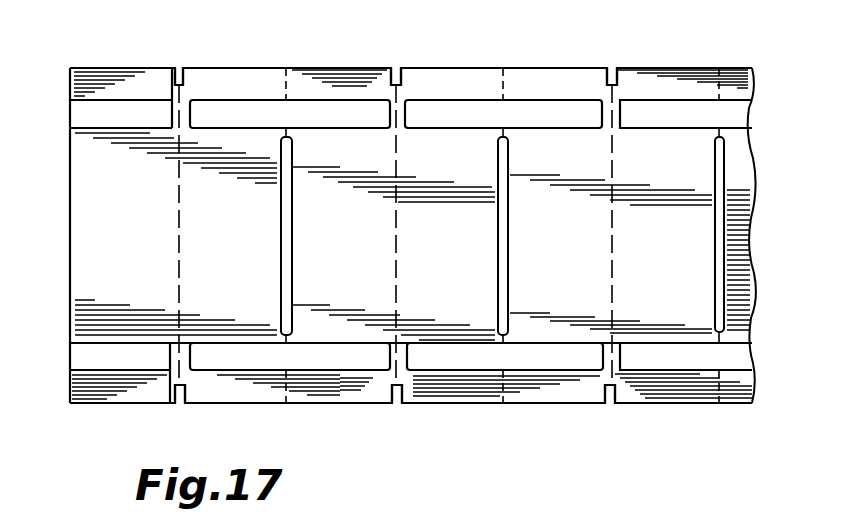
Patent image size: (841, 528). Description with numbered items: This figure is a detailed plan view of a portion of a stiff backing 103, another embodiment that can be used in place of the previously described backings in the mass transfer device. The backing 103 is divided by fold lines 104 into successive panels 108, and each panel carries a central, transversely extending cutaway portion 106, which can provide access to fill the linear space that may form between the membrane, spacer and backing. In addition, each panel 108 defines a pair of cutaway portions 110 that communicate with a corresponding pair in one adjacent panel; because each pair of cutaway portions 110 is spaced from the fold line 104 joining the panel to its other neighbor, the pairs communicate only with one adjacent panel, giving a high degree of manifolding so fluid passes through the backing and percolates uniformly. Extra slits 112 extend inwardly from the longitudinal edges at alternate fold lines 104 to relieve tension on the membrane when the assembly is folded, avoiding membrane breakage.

The stiff backing 103 is at (83, 267).
The fold lines 104 is at (178, 242).
The cutaway portions 106 is at (281, 198).
The panel 108 is at (250, 255).
The cutaway portions 110 is at (264, 112).
The slits 112 is at (182, 68).